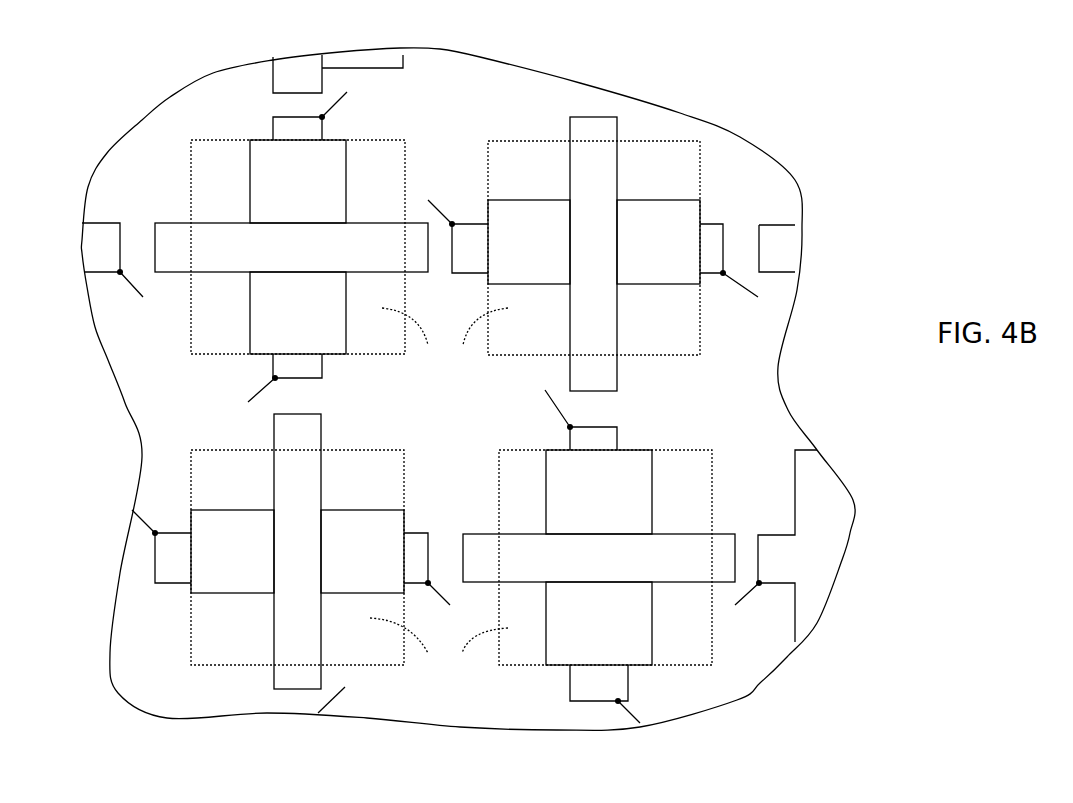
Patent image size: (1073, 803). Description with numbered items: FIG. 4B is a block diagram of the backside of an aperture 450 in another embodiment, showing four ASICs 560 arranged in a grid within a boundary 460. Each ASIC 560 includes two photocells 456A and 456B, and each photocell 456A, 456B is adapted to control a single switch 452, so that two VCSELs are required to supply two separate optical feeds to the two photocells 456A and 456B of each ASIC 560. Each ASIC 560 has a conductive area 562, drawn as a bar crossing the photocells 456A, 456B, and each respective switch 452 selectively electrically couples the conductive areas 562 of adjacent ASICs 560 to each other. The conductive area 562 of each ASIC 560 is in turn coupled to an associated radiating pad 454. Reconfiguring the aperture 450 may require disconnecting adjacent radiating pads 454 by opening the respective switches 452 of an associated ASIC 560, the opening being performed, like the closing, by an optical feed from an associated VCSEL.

The aperture 450 is at (797, 89).
The switch 452 is at (262, 387).
The radiating pad 454 is at (439, 495).
The photocell 456A is at (421, 366).
The photocell 456B is at (475, 432).
The boundary region 460 is at (758, 427).
The ASIC 560 is at (349, 137).
The conductive area 562 is at (180, 237).